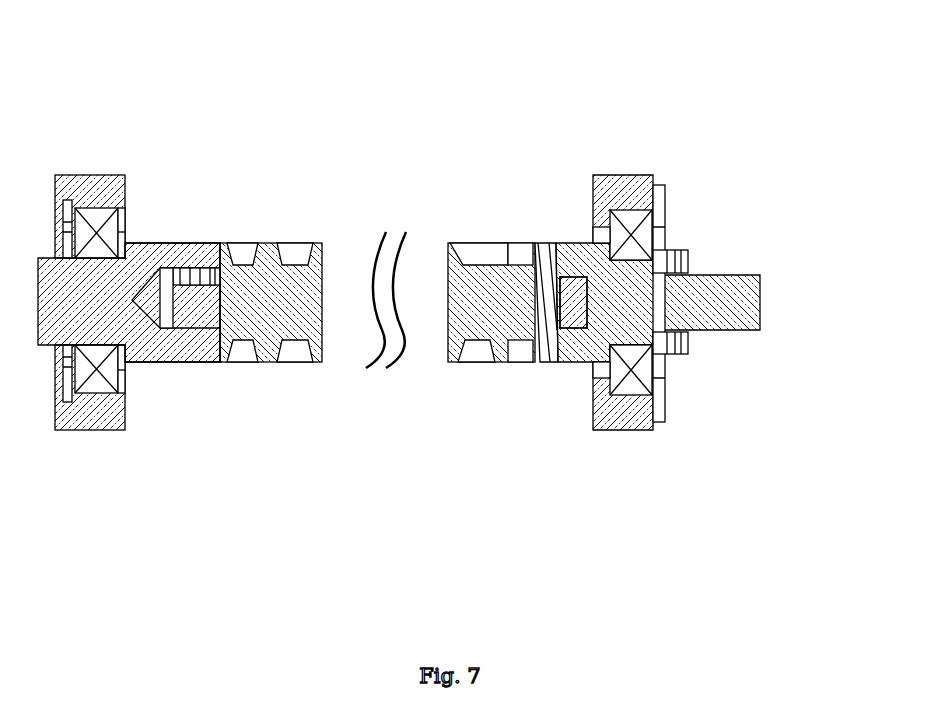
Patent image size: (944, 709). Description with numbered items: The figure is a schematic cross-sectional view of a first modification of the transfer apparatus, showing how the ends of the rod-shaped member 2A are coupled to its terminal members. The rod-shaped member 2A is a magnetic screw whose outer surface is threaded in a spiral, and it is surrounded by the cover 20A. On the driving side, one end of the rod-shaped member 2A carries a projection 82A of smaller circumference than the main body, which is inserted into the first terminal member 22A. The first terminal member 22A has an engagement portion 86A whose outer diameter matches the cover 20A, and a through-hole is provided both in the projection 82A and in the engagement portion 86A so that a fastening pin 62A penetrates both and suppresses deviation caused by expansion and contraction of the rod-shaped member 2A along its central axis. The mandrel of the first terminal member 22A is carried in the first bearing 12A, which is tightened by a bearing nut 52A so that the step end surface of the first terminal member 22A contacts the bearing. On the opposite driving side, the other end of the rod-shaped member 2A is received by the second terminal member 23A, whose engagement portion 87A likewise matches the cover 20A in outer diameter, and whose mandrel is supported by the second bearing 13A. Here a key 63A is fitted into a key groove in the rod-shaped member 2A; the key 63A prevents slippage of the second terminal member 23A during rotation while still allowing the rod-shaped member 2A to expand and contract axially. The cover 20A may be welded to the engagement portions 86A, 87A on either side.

The rod-shaped member 2A is at (303, 362).
The first bearing 12A is at (632, 393).
The second bearing 13A is at (97, 392).
The cover 20A is at (300, 243).
The first terminal member 22A is at (728, 305).
The second terminal member 23A is at (141, 258).
The bearing nut 52A is at (688, 340).
The fastening pin 62A is at (548, 362).
The key 63A is at (202, 277).
The projection 82A is at (528, 290).
The engagement portion 86A is at (577, 362).
The engagement portion 87A is at (183, 362).